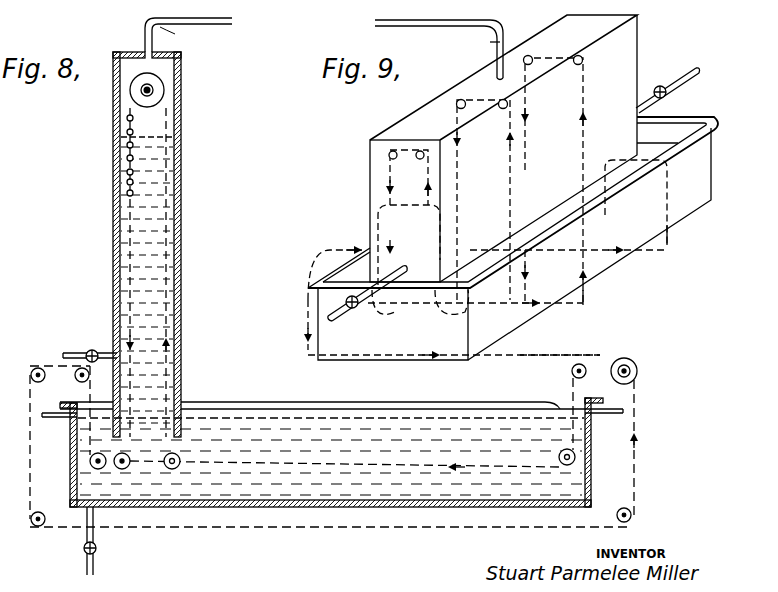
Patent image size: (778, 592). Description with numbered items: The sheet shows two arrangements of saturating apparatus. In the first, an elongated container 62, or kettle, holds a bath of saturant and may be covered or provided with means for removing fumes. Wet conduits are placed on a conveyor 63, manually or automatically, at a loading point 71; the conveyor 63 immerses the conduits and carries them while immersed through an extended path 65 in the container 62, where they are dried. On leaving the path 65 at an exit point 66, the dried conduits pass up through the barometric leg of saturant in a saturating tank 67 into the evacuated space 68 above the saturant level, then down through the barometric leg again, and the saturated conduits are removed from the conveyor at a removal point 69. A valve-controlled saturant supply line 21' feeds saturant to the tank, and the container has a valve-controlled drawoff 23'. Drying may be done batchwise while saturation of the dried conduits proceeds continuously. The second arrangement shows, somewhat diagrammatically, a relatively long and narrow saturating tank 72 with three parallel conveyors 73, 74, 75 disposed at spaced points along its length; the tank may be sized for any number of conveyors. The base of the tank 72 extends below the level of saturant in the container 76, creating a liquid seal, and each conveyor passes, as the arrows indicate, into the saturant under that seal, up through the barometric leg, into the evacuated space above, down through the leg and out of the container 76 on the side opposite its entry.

In FIG. 8, the elongated container 62 is at (597, 483).
In FIG. 8, the conveyor 63 is at (600, 360).
In FIG. 8, the extended path 65 is at (410, 402).
In FIG. 8, the exit point of path 66 is at (174, 470).
In FIG. 8, the saturating tank 67 is at (183, 300).
In FIG. 8, the evacuated space 68 is at (166, 102).
In FIG. 8, the removal point 69 is at (44, 366).
In FIG. 8, the loading point 71 is at (638, 363).
In FIG. 9, the saturating tank 72 is at (636, 57).
In FIG. 9, the conveyor 73 is at (528, 340).
In FIG. 9, the conveyor 74 is at (590, 297).
In FIG. 9, the conveyor 75 is at (672, 250).
In FIG. 9, the container for saturant 76 is at (700, 173).
In FIG. 8, the saturant supply line 21' is at (90, 336).
In FIG. 9, the saturant supply line 21' is at (534, 206).
In FIG. 8, the drawoff 23' is at (109, 543).